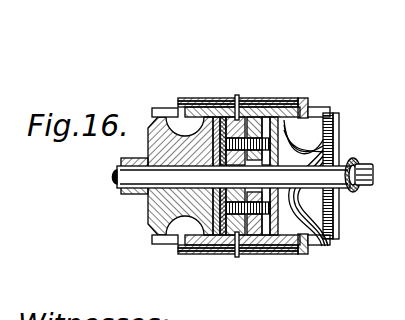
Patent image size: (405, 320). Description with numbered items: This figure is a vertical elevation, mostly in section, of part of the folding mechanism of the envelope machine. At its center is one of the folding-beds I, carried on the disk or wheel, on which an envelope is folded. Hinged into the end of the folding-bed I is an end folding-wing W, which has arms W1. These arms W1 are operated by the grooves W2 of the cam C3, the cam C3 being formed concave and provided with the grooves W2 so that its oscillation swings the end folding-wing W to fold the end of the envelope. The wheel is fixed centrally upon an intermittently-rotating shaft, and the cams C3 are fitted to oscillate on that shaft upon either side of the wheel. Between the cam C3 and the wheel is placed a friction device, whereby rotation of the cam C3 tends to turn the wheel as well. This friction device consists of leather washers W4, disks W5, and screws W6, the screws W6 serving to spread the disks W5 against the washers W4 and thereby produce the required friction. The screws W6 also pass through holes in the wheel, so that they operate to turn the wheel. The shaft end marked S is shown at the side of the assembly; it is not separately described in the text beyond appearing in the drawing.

The end folding-wing W is at (155, 108).
The arms of the end folding-wing W1 is at (325, 107).
The grooves of the cams W2 is at (320, 152).
The leather washers W4 is at (217, 118).
The disks W5 is at (265, 303).
The screws W6 is at (263, 97).
The folding-bed I is at (239, 96).
The shaft end S is at (373, 168).
The cam C3 is at (360, 218).